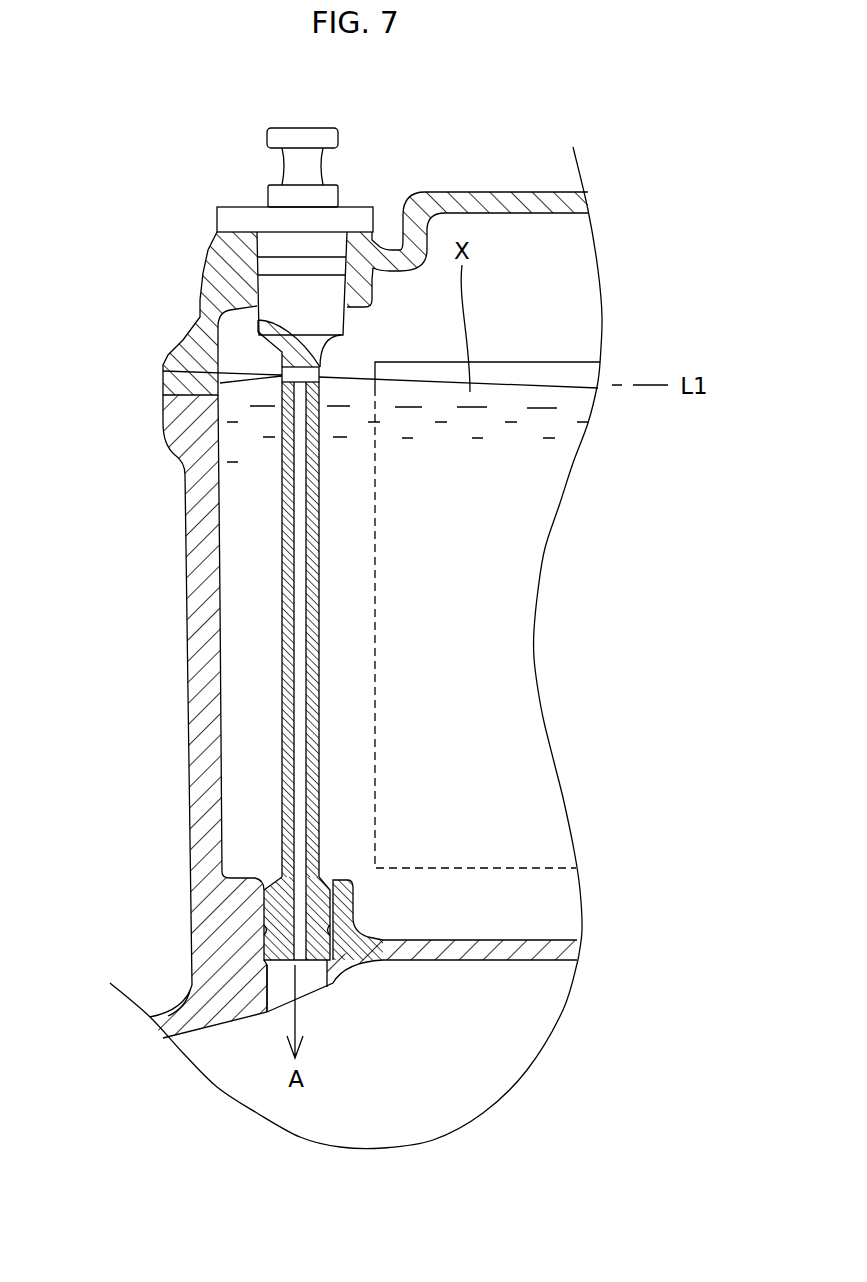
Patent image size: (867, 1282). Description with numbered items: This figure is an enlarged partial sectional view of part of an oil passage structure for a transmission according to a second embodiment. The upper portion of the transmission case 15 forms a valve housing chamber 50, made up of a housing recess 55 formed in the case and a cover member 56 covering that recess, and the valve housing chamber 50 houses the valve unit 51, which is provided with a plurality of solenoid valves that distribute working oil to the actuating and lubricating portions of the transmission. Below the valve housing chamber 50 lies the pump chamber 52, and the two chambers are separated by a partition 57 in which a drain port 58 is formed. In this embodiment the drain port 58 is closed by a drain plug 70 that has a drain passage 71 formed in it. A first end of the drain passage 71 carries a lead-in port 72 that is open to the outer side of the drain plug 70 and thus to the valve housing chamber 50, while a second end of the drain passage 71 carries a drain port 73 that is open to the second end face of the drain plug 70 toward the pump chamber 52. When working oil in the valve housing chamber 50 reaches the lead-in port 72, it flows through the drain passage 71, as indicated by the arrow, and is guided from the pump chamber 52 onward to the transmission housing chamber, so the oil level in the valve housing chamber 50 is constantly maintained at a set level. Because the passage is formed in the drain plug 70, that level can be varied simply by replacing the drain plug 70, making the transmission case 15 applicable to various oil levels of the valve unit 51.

The transmission case 15 is at (195, 287).
The valve housing chamber 50 is at (528, 262).
The valve unit 51 is at (572, 364).
The pump chamber 52 is at (523, 1002).
The housing recess 55 is at (222, 557).
The cover member 56 is at (472, 200).
The partition 57 is at (442, 952).
The drain port 58 is at (310, 982).
The drain plug 70 is at (250, 195).
The drain passage 71 is at (298, 655).
The lead-in port 72 is at (283, 375).
The drain port 73 is at (292, 953).